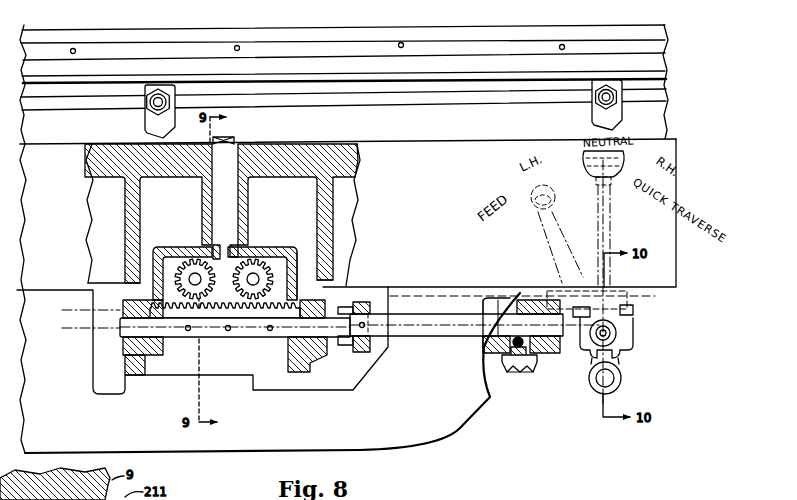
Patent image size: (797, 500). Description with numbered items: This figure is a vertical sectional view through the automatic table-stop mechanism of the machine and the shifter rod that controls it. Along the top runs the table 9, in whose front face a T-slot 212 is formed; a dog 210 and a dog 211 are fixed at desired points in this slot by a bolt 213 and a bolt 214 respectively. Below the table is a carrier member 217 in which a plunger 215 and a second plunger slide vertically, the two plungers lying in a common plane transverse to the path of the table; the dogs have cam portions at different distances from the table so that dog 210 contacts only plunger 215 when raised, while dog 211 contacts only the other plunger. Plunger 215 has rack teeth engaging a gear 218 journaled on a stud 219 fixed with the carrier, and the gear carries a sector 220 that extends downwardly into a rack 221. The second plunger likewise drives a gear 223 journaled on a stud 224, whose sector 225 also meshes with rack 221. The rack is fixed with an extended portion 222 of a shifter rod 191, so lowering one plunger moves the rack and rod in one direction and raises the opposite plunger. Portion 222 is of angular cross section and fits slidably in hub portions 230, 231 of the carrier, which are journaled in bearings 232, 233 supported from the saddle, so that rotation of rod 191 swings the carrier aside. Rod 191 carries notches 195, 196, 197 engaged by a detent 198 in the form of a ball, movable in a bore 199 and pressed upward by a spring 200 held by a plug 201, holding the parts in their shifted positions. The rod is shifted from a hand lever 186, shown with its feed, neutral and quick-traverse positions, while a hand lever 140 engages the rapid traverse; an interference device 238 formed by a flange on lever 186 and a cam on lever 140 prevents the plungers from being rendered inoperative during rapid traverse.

The table 9 is at (466, 47).
The hand lever 140 is at (532, 188).
The hand lever 186 is at (605, 227).
The shifter rod 191 is at (427, 330).
The notch 195 is at (483, 300).
The notch 196 is at (498, 300).
The notch 197 is at (515, 300).
The detent 198 is at (490, 335).
The bore 199 is at (520, 372).
The spring 200 is at (537, 358).
The plug 201 is at (523, 372).
The dog 210 is at (152, 87).
The dog 211 is at (600, 84).
The T-slot 212 is at (302, 97).
The bolt 213 is at (167, 97).
The bolt 214 is at (616, 84).
The plunger 215 is at (230, 138).
The carrier member 217 is at (248, 196).
The gear 218 is at (188, 272).
The stud 219 is at (157, 255).
The sector 220 is at (160, 293).
The rack 221 is at (206, 322).
The extended portion 222 is at (244, 330).
The gear 223 is at (256, 270).
The stud 224 is at (262, 289).
The sector 225 is at (280, 270).
The hub portion 230 is at (127, 342).
The hub portion 231 is at (327, 337).
The bearing 232 is at (127, 360).
The bearing 233 is at (311, 376).
The interference device 238 is at (630, 358).